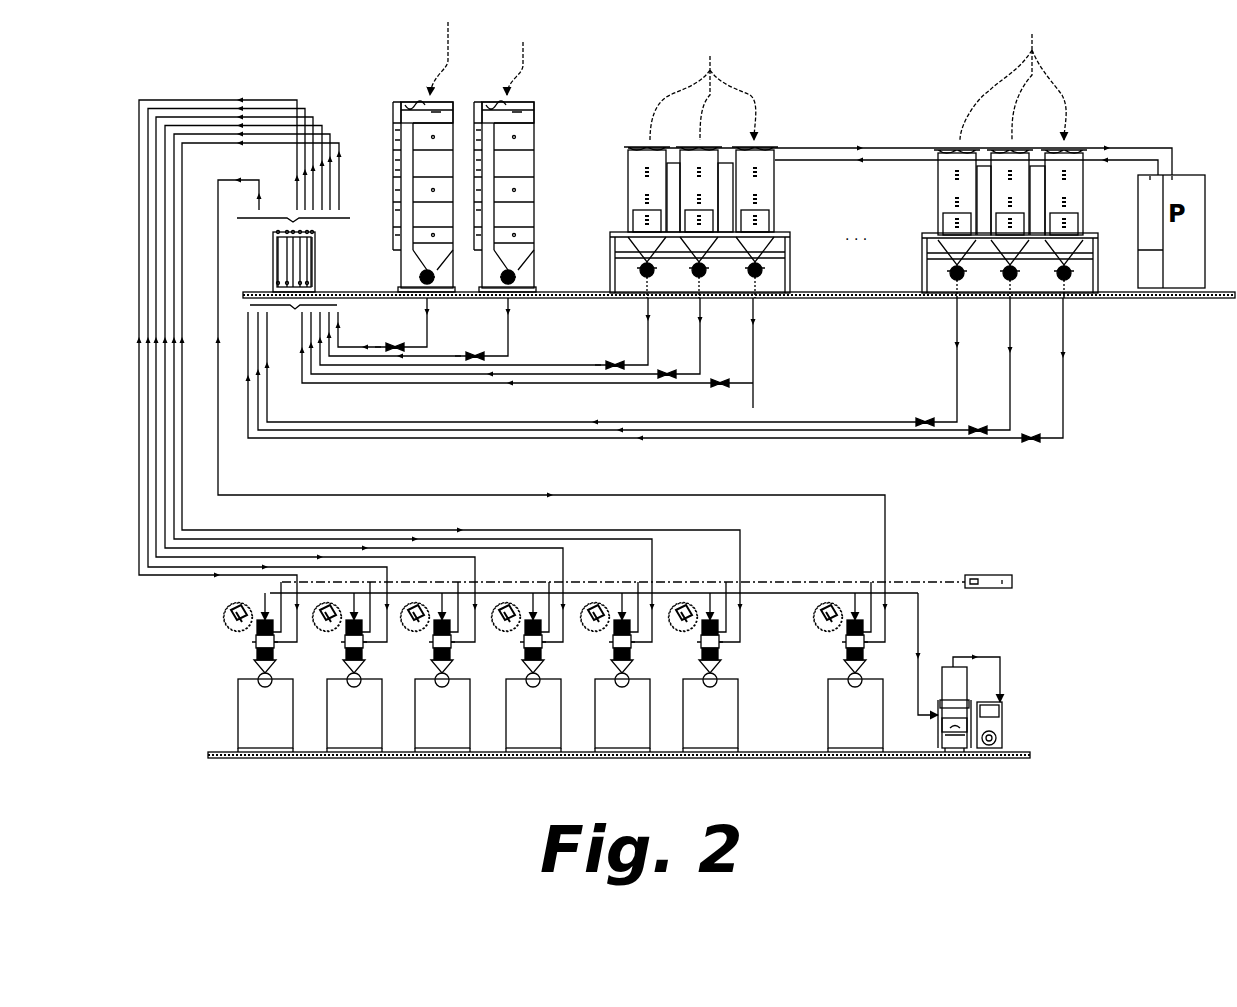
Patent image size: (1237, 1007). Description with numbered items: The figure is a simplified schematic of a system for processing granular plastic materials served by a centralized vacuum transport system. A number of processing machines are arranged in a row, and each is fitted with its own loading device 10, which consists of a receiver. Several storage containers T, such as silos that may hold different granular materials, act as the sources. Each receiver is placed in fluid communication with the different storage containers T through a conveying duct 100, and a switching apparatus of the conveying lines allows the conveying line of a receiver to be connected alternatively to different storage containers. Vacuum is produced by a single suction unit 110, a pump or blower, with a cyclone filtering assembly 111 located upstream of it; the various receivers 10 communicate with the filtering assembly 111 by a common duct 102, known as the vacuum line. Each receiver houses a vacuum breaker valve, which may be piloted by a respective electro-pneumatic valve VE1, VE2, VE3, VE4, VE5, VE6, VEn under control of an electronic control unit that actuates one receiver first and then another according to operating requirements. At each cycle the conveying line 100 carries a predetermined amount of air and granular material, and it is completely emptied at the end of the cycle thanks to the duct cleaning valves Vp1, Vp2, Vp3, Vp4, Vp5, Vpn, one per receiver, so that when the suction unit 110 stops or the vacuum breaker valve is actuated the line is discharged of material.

The loading device 10 is at (245, 648).
The conveying duct 100 is at (800, 422).
The common duct 102 is at (920, 627).
The suction unit 110 is at (1002, 722).
The cyclone filtering assembly 111 is at (930, 727).
The duct cleaning valve Vp1 is at (382, 329).
The duct cleaning valve Vp2 is at (464, 341).
The duct cleaning valve Vp3 is at (604, 350).
The duct cleaning valve Vp4 is at (669, 359).
The duct cleaning valve Vp5 is at (726, 368).
The duct cleaning valve Vpn is at (987, 423).
The electro-pneumatic valve VE1 is at (206, 618).
The electro-pneumatic valve VE2 is at (320, 603).
The electro-pneumatic valve VE3 is at (410, 603).
The electro-pneumatic valve VE4 is at (496, 638).
The electro-pneumatic valve VE5 is at (586, 637).
The electro-pneumatic valve VE6 is at (674, 637).
The electro-pneumatic valve VEn is at (800, 619).
The storage container T is at (748, 71).